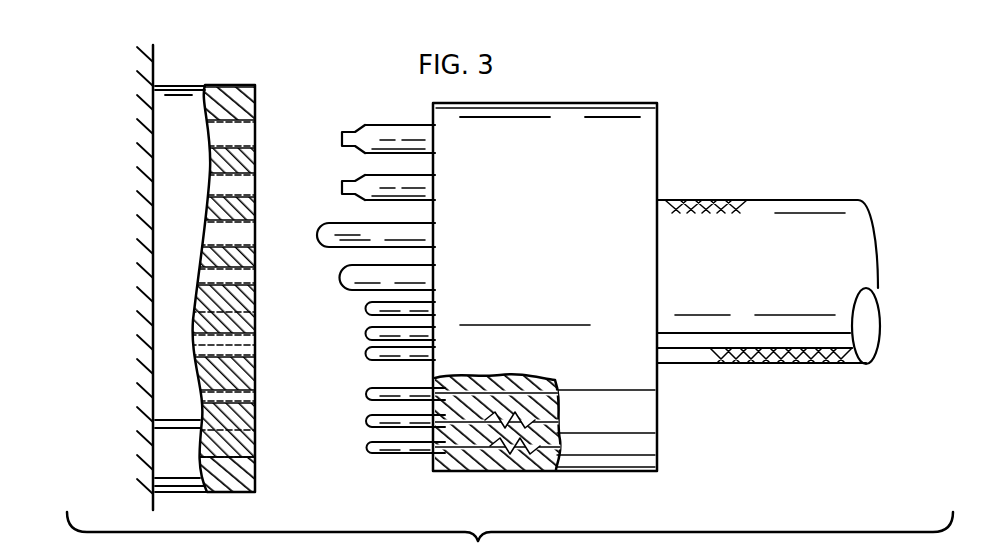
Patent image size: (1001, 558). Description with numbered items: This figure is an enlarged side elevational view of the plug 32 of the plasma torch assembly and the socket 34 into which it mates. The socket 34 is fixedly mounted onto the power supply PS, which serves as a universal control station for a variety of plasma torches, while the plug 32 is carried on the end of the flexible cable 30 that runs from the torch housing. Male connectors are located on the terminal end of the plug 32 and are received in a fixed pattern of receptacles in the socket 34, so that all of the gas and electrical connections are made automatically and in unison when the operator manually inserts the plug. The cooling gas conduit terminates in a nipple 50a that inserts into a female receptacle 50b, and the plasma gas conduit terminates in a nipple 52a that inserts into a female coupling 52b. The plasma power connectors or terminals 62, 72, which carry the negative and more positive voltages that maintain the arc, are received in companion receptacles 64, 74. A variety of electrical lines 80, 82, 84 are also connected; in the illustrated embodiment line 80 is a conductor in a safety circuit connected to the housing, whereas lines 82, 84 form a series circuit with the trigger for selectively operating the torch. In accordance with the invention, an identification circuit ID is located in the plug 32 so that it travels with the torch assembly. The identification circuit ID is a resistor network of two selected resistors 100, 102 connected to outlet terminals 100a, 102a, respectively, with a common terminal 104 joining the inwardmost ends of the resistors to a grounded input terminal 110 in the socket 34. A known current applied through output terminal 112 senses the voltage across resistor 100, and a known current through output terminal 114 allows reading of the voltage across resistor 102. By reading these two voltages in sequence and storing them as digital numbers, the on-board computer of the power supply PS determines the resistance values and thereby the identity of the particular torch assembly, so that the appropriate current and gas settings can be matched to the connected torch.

The power supply PS is at (162, 62).
The flexible cable 30 is at (782, 198).
The plug 32 is at (615, 105).
The socket 34 is at (204, 87).
The nipple 50a is at (393, 128).
The female receptacle 50b is at (245, 132).
The nipple 52a is at (415, 185).
The female coupling 52b is at (215, 190).
The connector 62 is at (413, 235).
The receptacle 64 is at (243, 240).
The connector 72 is at (418, 278).
The receptacle 74 is at (240, 277).
The electrical line 80 is at (435, 304).
The electrical line 82 is at (438, 330).
The electrical line 84 is at (437, 348).
The resistor 100 is at (520, 428).
The outlet terminal 100a is at (372, 422).
The resistor 102 is at (515, 432).
The outlet terminal 102a is at (368, 448).
The common terminal 104 is at (372, 392).
The input terminal 110 is at (258, 393).
The output terminal 112 is at (205, 418).
The output terminal 114 is at (213, 462).
The identification circuit ID is at (538, 374).